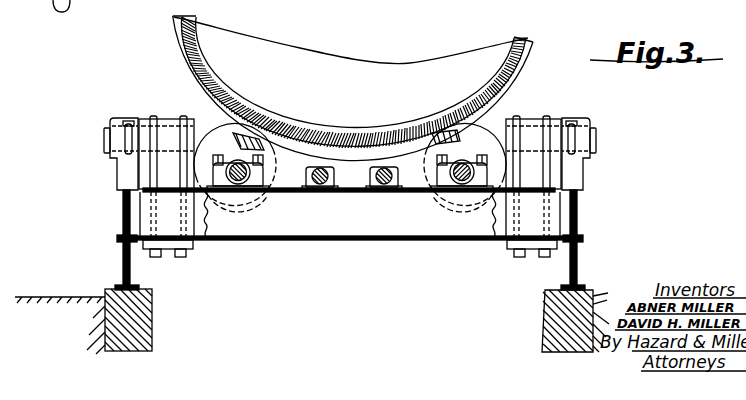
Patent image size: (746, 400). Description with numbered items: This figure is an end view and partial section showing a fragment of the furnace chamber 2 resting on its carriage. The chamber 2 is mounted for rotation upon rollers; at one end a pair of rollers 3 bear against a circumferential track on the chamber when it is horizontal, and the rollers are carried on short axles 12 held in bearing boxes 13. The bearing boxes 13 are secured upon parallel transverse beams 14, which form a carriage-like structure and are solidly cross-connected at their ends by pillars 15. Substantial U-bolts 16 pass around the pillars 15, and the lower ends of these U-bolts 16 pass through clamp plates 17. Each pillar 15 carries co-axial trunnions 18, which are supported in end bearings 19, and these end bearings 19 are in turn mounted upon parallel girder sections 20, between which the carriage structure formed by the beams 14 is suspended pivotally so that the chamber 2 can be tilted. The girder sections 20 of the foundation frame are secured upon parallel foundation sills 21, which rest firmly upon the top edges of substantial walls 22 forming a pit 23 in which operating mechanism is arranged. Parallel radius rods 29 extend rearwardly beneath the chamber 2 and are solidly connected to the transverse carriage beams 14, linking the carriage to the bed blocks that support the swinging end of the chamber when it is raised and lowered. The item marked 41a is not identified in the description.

The furnace chamber 2 is at (403, 72).
The rollers 3 is at (224, 143).
The short axles 12 is at (240, 172).
The bearing boxes 13 is at (230, 148).
The transverse beams 14 is at (438, 228).
The pillars 15 is at (167, 122).
The U-bolts 16 is at (154, 120).
The clamp plates 17 is at (517, 243).
The trunnions 18 is at (105, 137).
The end bearings 19 is at (117, 120).
The girder sections 20 is at (123, 211).
The foundation sills 21 is at (130, 278).
The walls 22 is at (152, 307).
The pit 23 is at (324, 326).
The radius rods 29 is at (325, 190).
The member 41a is at (71, 6).